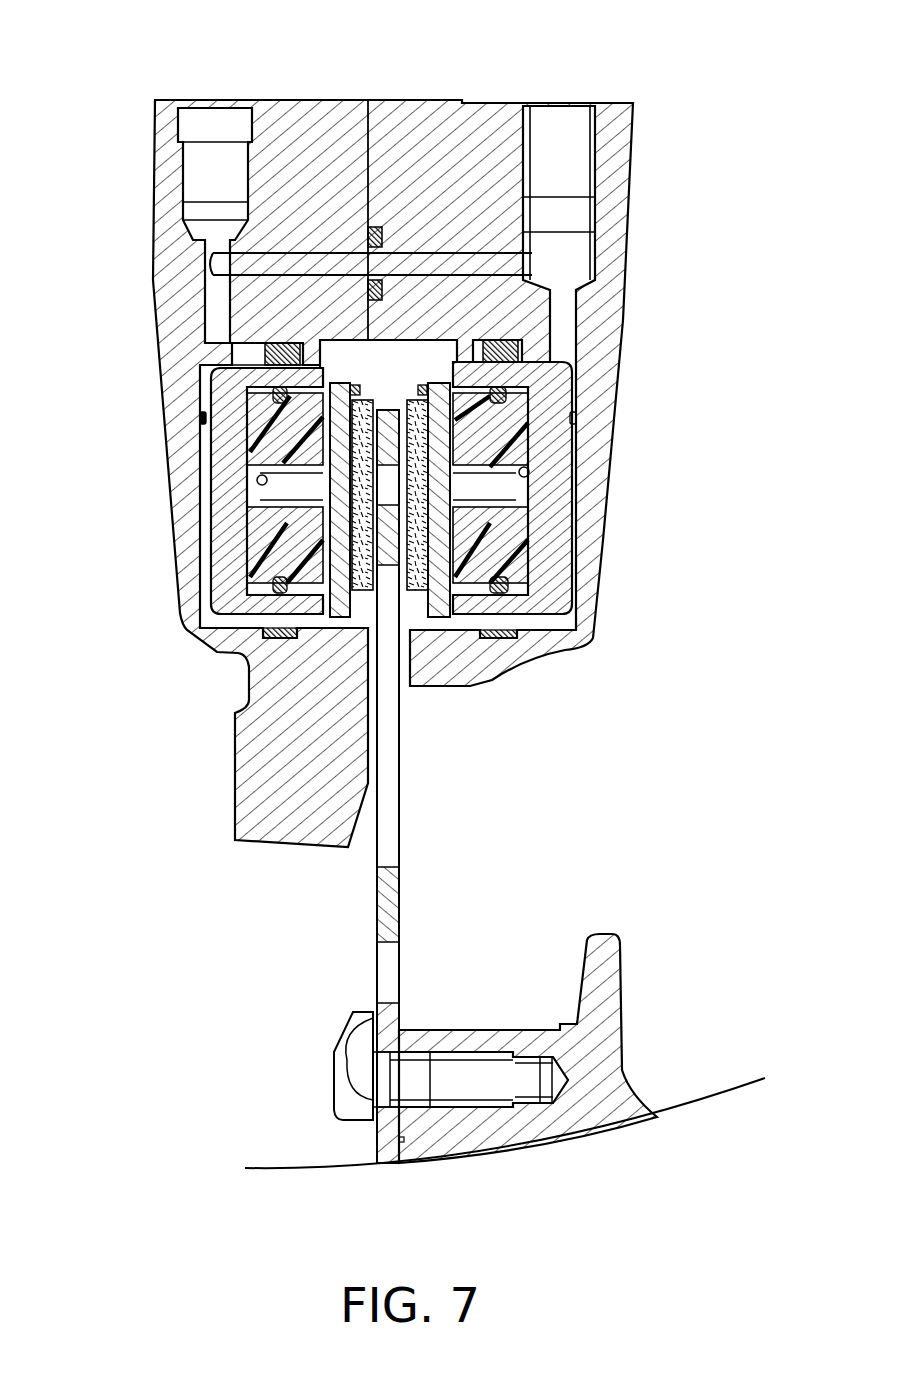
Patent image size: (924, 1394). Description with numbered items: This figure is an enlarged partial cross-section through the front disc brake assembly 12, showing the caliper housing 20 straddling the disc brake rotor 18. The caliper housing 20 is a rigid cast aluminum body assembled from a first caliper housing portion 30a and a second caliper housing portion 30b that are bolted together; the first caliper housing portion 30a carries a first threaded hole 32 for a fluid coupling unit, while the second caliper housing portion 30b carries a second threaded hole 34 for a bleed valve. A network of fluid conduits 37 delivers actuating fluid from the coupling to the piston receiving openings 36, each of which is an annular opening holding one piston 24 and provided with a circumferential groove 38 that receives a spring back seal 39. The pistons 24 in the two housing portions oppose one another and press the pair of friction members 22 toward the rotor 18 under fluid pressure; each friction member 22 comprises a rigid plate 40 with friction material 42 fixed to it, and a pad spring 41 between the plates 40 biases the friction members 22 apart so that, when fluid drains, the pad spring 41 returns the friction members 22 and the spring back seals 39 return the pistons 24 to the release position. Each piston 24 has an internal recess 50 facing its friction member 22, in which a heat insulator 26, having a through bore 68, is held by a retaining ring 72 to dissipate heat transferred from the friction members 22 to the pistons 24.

The front disc brake assembly 12 is at (642, 74).
The disc brake rotor 18 is at (404, 801).
The caliper housing 20 is at (646, 120).
The friction member 22 is at (443, 635).
The piston 24 is at (197, 388).
The heat insulator 26 is at (243, 511).
The first caliper housing portion 30a is at (442, 98).
The second caliper housing portion 30b is at (303, 98).
The first threaded hole 32 is at (587, 147).
The second threaded hole 34 is at (188, 177).
The piston receiving opening 36 is at (200, 422).
The fluid conduit 37 is at (215, 318).
The circumferential groove 38 is at (265, 344).
The spring back seal 39 is at (278, 358).
The plate 40 is at (340, 383).
The pad spring 41 is at (420, 386).
The friction material 42 is at (413, 396).
The internal recess 50 is at (257, 481).
The through bore 68 is at (250, 558).
The retaining ring 72 is at (222, 633).